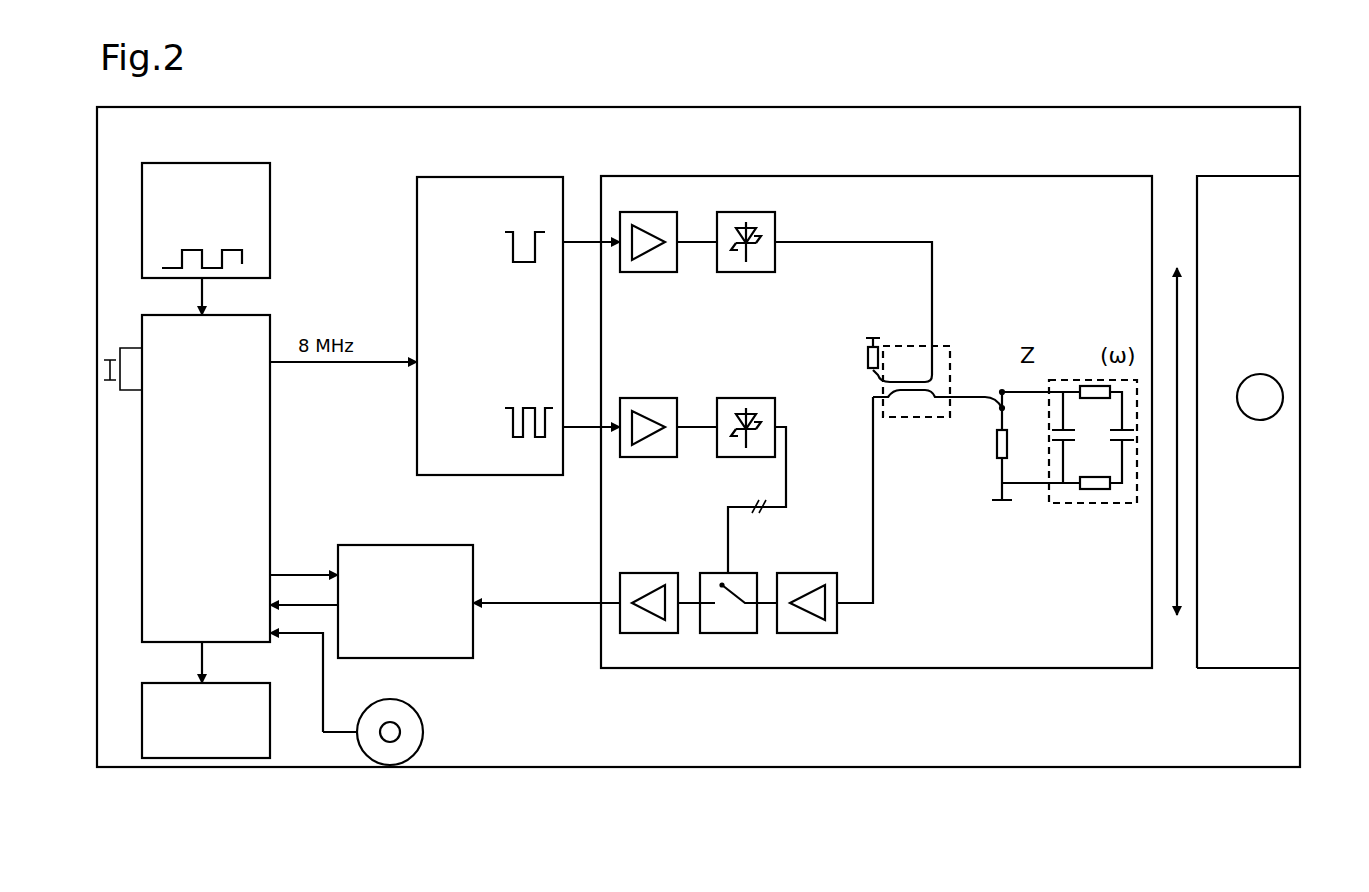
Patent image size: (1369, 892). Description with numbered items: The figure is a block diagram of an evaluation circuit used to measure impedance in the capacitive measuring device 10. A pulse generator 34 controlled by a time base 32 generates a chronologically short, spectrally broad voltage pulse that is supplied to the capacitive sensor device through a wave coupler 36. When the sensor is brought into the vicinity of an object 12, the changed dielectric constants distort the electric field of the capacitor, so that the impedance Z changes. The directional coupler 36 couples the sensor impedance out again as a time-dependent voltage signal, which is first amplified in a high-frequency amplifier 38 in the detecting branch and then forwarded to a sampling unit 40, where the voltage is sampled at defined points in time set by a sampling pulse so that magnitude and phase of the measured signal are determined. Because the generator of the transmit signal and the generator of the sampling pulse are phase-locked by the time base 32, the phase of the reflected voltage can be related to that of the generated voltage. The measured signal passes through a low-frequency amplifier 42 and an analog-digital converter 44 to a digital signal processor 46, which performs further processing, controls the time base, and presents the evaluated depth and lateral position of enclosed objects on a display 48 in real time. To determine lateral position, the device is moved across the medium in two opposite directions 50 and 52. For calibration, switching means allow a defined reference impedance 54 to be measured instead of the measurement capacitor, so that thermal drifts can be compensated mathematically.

The housing 10 is at (1300, 613).
The object 12 is at (1273, 405).
The time base 32 is at (483, 192).
The pulse generator 34 is at (648, 213).
The wave coupler 36 is at (945, 350).
The high-frequency amplifier 38 is at (835, 625).
The sampling unit 40 is at (742, 622).
The low frequency amplifier 42 is at (678, 625).
The analog-digital converter 44 is at (472, 645).
The digital signal processor 46 is at (158, 600).
The display unit 48 is at (165, 742).
The direction 50 is at (1177, 255).
The direction 52 is at (1177, 625).
The reference impedance 54 is at (995, 472).